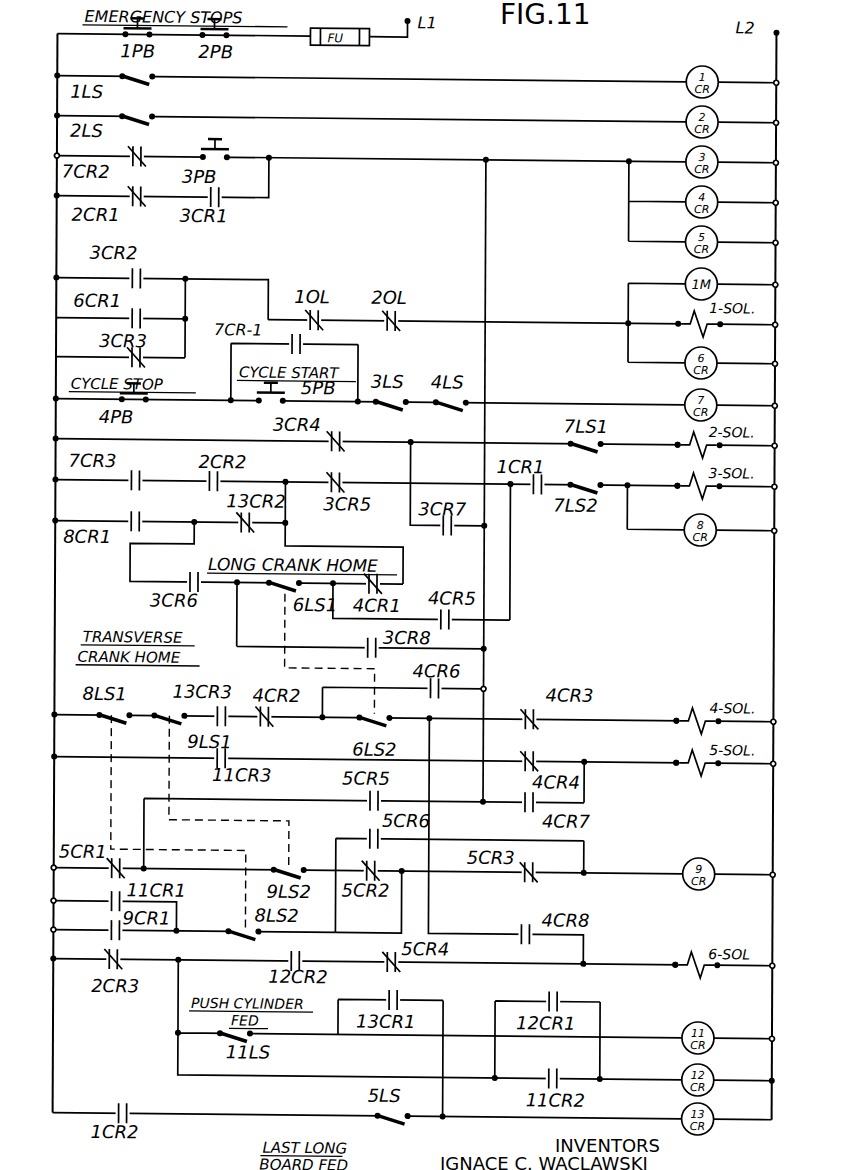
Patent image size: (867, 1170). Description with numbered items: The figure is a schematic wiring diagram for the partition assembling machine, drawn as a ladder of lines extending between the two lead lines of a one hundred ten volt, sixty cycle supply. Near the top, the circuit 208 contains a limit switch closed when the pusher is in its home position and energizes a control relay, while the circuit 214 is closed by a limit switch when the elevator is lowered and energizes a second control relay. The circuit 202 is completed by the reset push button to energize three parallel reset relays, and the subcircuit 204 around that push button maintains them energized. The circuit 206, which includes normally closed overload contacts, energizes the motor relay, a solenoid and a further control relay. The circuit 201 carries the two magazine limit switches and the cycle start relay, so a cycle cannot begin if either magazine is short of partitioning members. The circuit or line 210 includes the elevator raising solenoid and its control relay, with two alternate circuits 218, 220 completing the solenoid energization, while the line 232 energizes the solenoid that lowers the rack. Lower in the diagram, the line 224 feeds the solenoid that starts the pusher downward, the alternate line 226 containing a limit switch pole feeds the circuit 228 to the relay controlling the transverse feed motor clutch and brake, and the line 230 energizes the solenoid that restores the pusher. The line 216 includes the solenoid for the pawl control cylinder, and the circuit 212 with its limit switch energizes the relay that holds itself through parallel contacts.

The circuit 208 is at (472, 76).
The circuit 214 is at (448, 116).
The circuit 202 is at (534, 156).
The subcircuit 204 is at (252, 205).
The circuit 206 is at (418, 318).
The circuit 201 is at (528, 399).
The line 232 is at (492, 439).
The circuit or line 210 is at (460, 466).
The alternate circuit 218 is at (204, 527).
The alternate circuit or line 220 is at (128, 589).
The line 224 is at (592, 715).
The line 230 is at (612, 768).
The circuit 228 is at (640, 866).
The alternate line 226 is at (384, 908).
The line 216 is at (436, 964).
The circuit 212 is at (230, 1116).